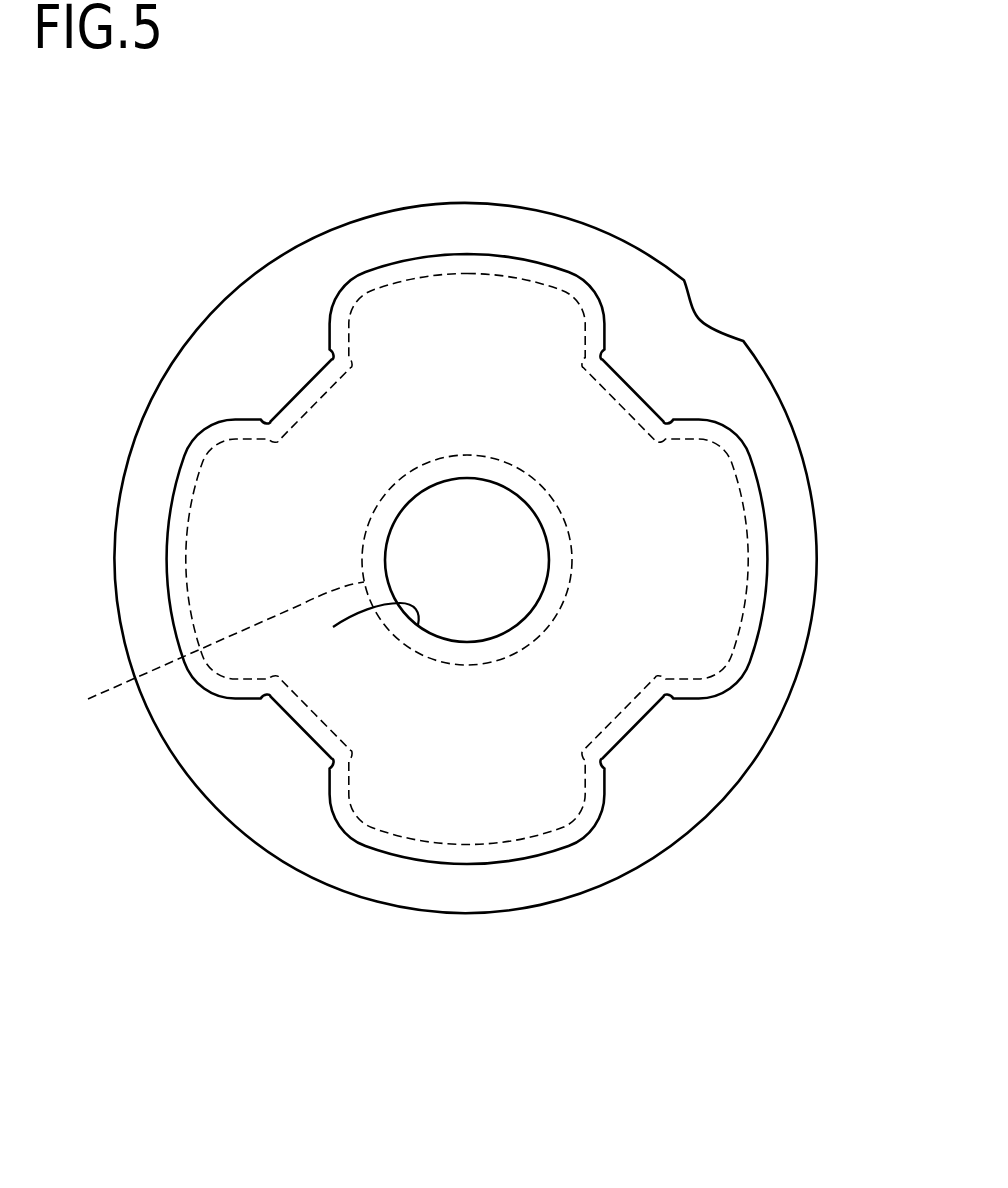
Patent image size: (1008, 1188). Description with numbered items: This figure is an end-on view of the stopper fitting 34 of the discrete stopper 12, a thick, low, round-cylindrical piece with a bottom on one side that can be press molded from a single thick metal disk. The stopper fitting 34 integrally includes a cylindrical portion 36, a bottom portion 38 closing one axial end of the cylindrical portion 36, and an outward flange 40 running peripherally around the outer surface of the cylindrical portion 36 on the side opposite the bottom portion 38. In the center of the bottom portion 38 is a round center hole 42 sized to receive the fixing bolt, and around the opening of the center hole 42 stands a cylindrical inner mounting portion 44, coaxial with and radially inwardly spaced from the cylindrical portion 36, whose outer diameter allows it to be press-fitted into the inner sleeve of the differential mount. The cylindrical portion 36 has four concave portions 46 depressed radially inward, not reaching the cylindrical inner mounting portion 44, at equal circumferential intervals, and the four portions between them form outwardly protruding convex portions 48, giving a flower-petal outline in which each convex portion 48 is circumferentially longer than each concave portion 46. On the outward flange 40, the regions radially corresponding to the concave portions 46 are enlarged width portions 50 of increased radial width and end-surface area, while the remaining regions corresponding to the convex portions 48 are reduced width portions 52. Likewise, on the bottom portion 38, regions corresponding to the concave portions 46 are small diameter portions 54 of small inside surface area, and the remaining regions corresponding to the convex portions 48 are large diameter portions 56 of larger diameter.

The discrete stopper 12 is at (445, 148).
The stopper fitting 34 is at (632, 229).
The cylindrical portion 36 is at (784, 596).
The bottom portion 38 is at (675, 567).
The outward flange 40 is at (773, 708).
The center hole 42 is at (333, 627).
The cylindrical inner mounting portion 44 is at (212, 650).
The concave portion 46 is at (305, 376).
The convex portion 48 is at (504, 253).
The enlarged width portion 50 is at (238, 357).
The reduced width portion 52 is at (560, 242).
The small diameter portion 54 is at (317, 433).
The large diameter portion 56 is at (420, 307).